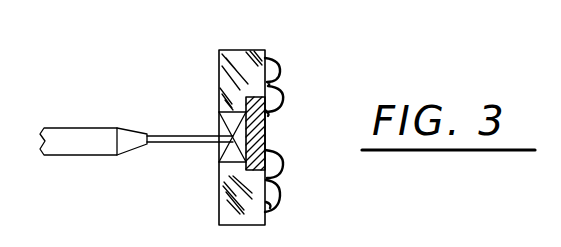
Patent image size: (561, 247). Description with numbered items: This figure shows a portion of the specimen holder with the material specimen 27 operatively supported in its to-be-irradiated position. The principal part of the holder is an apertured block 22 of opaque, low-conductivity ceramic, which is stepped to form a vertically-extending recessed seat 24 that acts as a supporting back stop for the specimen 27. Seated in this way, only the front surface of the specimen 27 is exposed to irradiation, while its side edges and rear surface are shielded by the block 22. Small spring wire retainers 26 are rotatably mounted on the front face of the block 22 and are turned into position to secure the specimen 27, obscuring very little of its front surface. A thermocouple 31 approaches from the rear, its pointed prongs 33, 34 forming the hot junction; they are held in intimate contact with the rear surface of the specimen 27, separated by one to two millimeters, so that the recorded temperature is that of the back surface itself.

The apertured block 22 is at (240, 50).
The recessed seat 24 is at (263, 152).
The spring wire retainers 26 is at (280, 177).
The material specimen 27 is at (276, 124).
The thermocouple 31 is at (168, 120).
The prong 33 is at (221, 160).
The prong 34 is at (221, 114).